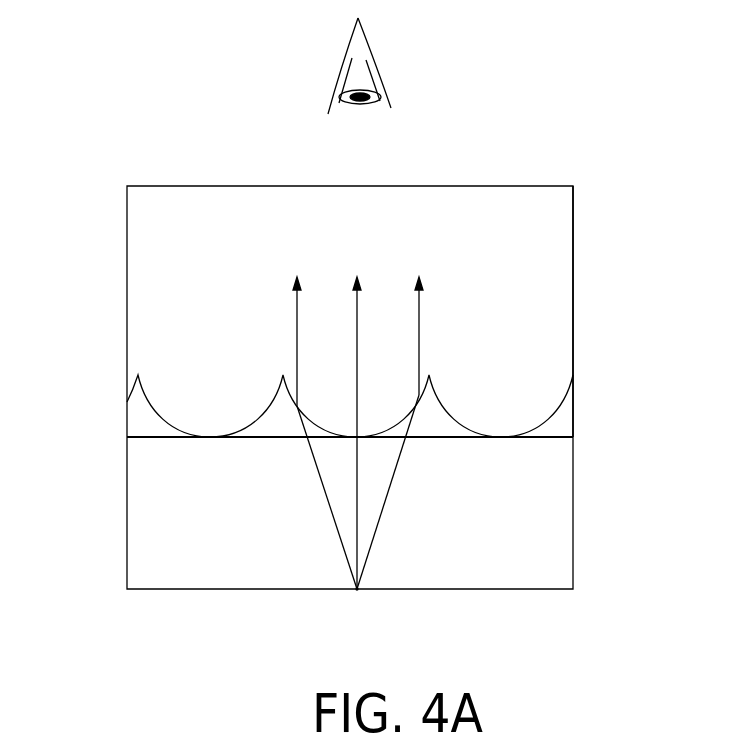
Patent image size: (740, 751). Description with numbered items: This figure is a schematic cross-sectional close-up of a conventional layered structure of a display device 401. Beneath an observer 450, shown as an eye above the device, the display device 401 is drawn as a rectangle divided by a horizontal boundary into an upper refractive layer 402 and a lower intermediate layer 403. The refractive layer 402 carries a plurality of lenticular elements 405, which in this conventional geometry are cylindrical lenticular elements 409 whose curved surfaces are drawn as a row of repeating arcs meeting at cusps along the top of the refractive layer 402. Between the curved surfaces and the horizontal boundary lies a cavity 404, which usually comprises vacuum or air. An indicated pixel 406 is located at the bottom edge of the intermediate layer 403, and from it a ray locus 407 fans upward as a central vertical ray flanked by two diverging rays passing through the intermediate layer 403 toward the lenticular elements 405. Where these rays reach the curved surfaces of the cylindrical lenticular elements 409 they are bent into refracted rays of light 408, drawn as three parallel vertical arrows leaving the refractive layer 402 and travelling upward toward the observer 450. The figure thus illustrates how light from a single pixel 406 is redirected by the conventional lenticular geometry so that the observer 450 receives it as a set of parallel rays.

The display device 401 is at (575, 167).
The refractive layer 402 is at (110, 193).
The intermediate layer 403 is at (110, 445).
The cavity 404 is at (563, 426).
The lenticular elements 405 is at (563, 345).
The indicated pixel 406 is at (357, 589).
The ray locus 407 is at (357, 520).
The refracted rays of light 408 is at (358, 357).
The conventional cylindrical lenticular elements 409 is at (563, 398).
The observer 450 is at (373, 67).